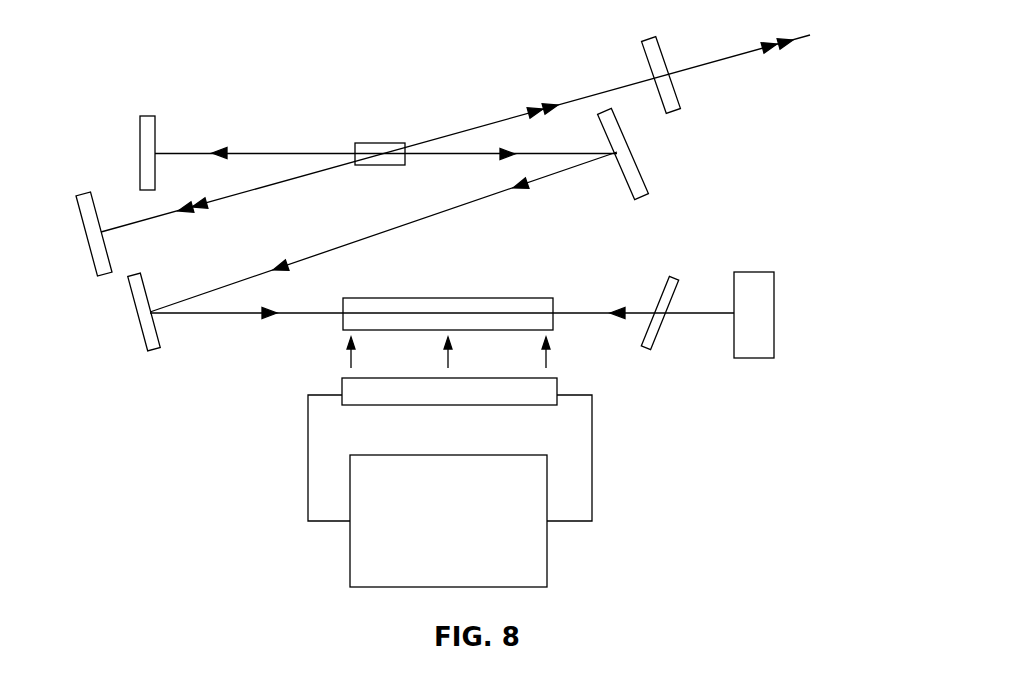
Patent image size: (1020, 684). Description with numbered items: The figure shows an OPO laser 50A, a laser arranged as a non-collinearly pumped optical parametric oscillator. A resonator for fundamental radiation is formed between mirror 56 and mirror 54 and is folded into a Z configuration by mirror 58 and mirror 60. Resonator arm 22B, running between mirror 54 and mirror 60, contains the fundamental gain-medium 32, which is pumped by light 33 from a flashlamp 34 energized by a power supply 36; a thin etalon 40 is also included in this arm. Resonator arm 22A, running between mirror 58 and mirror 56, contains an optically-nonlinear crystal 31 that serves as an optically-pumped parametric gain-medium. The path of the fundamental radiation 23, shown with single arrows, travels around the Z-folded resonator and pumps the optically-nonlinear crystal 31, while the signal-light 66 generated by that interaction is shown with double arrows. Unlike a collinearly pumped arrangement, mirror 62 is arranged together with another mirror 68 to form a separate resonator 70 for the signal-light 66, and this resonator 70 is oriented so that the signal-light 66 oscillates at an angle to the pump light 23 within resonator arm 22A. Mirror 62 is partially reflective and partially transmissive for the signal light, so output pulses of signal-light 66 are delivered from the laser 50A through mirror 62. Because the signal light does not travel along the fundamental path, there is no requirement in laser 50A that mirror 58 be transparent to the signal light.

The fundamental radiation 23 is at (222, 150).
The optically-nonlinear crystal 31 is at (365, 145).
The gain-medium 32 is at (497, 300).
The light 33 is at (345, 356).
The flashlamp 34 is at (510, 400).
The power supply 36 is at (432, 528).
The etalon 40 is at (651, 352).
The mirror 54 is at (757, 352).
The mirror 56 is at (140, 146).
The mirror 58 is at (630, 168).
The mirror 60 is at (155, 350).
The mirror 62 is at (680, 86).
The signal-light 66 is at (182, 213).
The mirror 68 is at (102, 273).
The resonator 70 is at (457, 121).
The resonator arm 22A is at (333, 135).
The resonator arm 22B is at (423, 291).
The OPO laser 50A is at (706, 476).